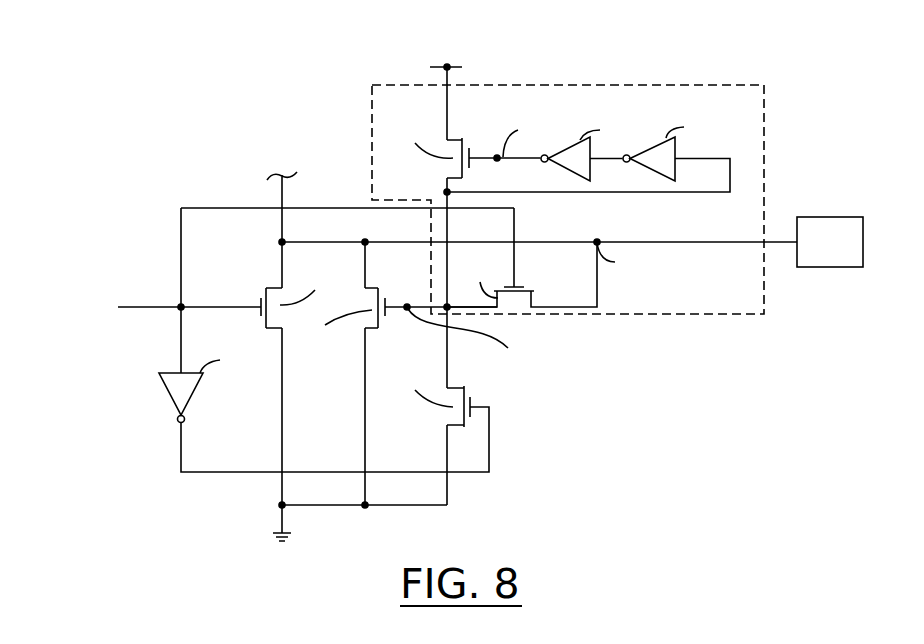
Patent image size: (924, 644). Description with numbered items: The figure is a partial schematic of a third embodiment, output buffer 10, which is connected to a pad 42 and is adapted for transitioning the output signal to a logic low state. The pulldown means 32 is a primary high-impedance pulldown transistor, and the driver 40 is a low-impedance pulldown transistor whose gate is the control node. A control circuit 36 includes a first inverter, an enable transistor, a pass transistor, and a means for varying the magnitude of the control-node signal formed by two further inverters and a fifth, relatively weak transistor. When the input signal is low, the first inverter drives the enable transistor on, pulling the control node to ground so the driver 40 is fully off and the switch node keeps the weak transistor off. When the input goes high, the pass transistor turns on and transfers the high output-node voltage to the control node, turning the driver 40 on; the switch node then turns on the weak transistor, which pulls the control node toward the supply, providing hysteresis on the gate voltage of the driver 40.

The output buffer 10 is at (182, 58).
The control circuit 36 is at (392, 84).
The pulldown means 32 is at (272, 290).
The driver 40 is at (379, 328).
The pad 42 is at (852, 217).